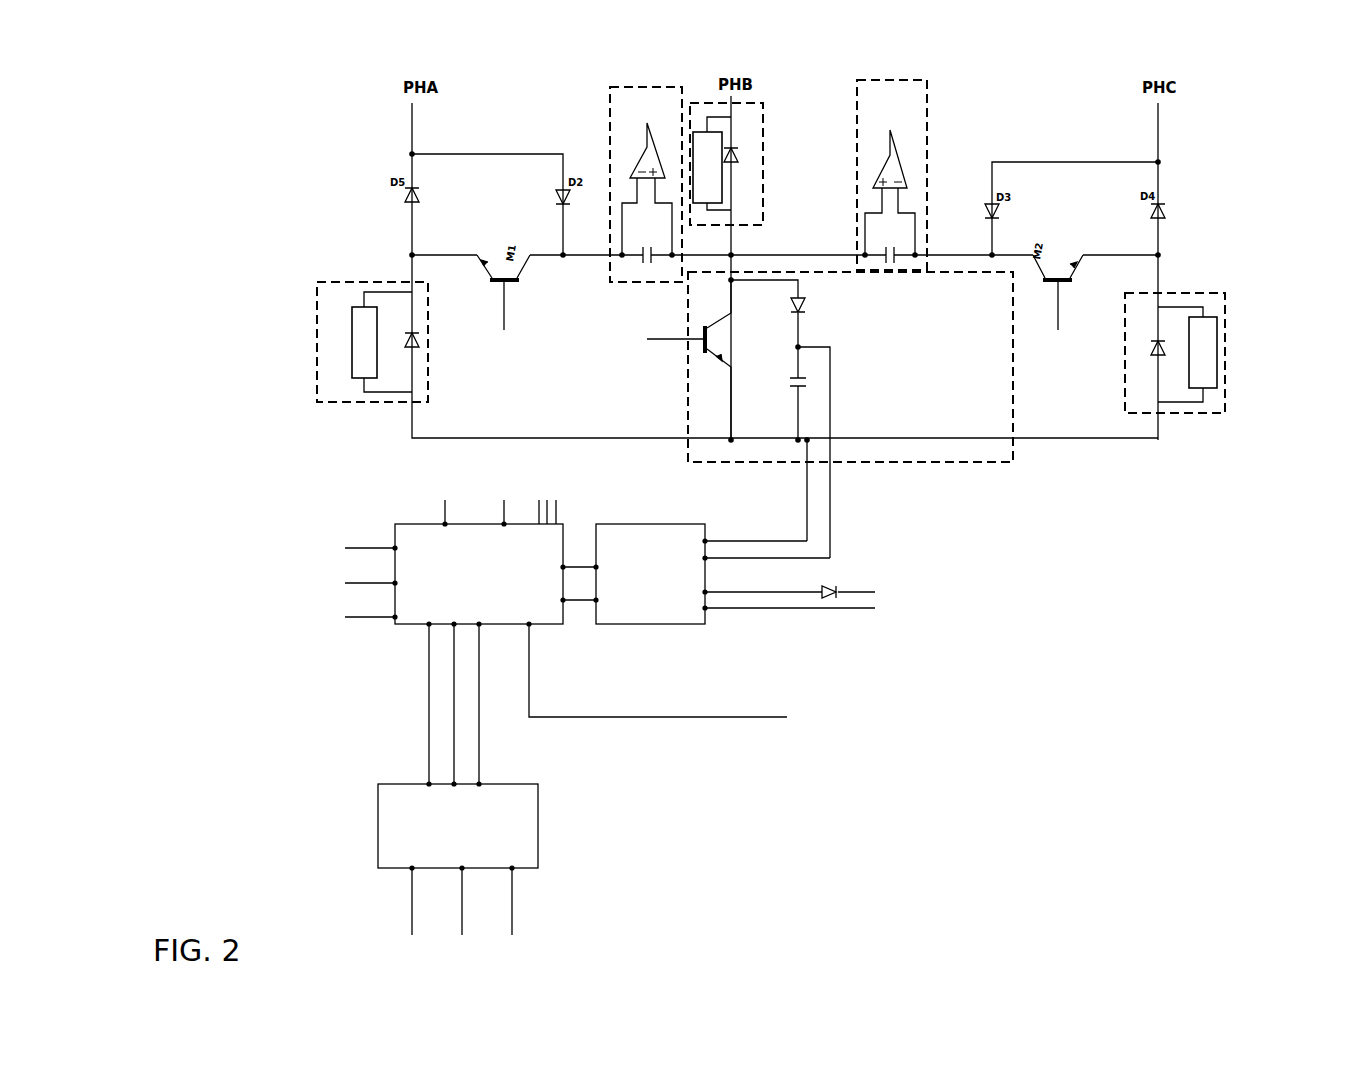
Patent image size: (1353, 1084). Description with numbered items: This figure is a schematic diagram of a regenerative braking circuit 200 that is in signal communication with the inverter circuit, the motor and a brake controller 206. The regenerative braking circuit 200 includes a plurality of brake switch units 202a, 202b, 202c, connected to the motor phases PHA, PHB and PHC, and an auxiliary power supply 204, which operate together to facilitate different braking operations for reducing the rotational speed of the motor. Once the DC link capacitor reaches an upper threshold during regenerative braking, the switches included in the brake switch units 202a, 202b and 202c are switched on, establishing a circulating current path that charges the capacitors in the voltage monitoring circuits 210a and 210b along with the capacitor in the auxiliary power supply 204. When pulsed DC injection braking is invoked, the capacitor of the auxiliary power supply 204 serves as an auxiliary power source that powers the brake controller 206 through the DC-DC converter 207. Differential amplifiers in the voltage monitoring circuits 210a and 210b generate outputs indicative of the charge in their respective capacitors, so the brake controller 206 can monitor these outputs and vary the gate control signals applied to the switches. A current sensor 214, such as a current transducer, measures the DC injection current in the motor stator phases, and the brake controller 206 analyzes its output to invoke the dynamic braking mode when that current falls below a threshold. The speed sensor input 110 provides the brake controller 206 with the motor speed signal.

The regenerative braking circuit 200 is at (180, 132).
The brake switch unit 202a is at (312, 295).
The brake switch unit 202b is at (768, 103).
The brake switch unit 202c is at (1233, 295).
The auxiliary power supply 204 is at (687, 378).
The brake controller 206 is at (412, 530).
The DC-DC converter 207 is at (653, 523).
The voltage monitoring circuit 210a is at (616, 85).
The voltage monitoring circuit 210b is at (929, 92).
The current sensor 214 is at (540, 828).
The speed sensor input 110 is at (658, 717).